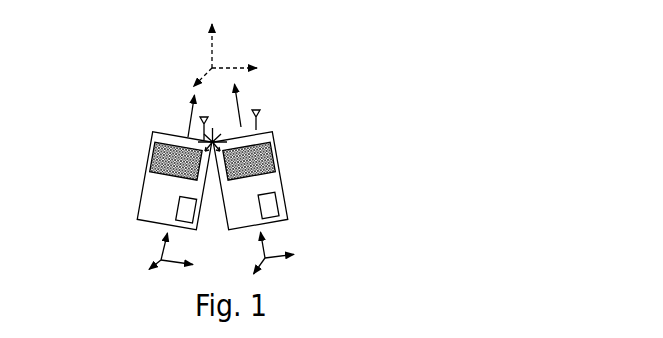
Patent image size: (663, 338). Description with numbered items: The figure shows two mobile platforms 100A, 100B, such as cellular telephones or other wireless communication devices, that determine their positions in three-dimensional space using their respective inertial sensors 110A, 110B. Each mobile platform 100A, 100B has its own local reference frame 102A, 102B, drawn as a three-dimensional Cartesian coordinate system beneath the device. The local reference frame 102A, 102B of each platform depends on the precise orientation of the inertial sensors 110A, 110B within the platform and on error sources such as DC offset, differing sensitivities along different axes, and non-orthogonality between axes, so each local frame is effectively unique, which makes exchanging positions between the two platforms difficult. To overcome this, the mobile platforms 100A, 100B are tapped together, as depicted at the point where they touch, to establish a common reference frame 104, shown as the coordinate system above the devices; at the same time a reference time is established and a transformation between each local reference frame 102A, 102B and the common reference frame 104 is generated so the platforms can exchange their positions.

The mobile platform 100A is at (147, 166).
The mobile platform 100B is at (279, 176).
The inertial sensor 110A is at (177, 213).
The inertial sensor 110B is at (278, 212).
The local reference frame 102A is at (161, 261).
The local reference frame 102B is at (297, 254).
The common reference frame 104 is at (213, 40).